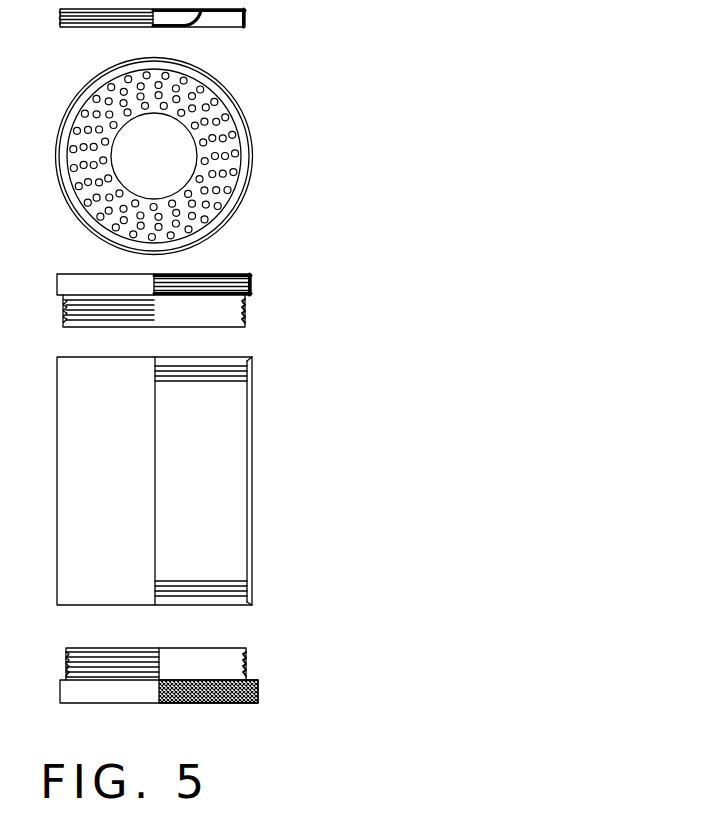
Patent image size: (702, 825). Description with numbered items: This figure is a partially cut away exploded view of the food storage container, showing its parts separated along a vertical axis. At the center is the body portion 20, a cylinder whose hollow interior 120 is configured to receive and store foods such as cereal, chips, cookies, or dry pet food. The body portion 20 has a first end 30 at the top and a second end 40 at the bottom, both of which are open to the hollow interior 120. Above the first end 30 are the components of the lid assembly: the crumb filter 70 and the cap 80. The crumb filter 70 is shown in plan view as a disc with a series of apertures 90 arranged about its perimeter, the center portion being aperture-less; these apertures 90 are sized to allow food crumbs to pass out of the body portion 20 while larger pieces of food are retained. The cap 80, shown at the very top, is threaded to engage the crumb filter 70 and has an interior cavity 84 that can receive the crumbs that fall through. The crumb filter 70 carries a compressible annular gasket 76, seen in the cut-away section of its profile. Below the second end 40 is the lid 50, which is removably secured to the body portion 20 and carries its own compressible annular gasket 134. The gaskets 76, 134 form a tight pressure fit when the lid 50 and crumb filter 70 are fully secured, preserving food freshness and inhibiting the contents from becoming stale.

The body portion 20 is at (257, 469).
The first end 30 is at (272, 357).
The second end 40 is at (270, 604).
The lid 50 is at (275, 690).
The crumb filter 70 is at (238, 210).
The compressible annular gasket 76 is at (254, 307).
The cap 80 is at (265, 24).
The interior cavity 84 is at (228, 22).
The apertures 90 is at (253, 165).
The hollow interior 120 is at (206, 431).
The compressible annular gasket 134 is at (258, 677).